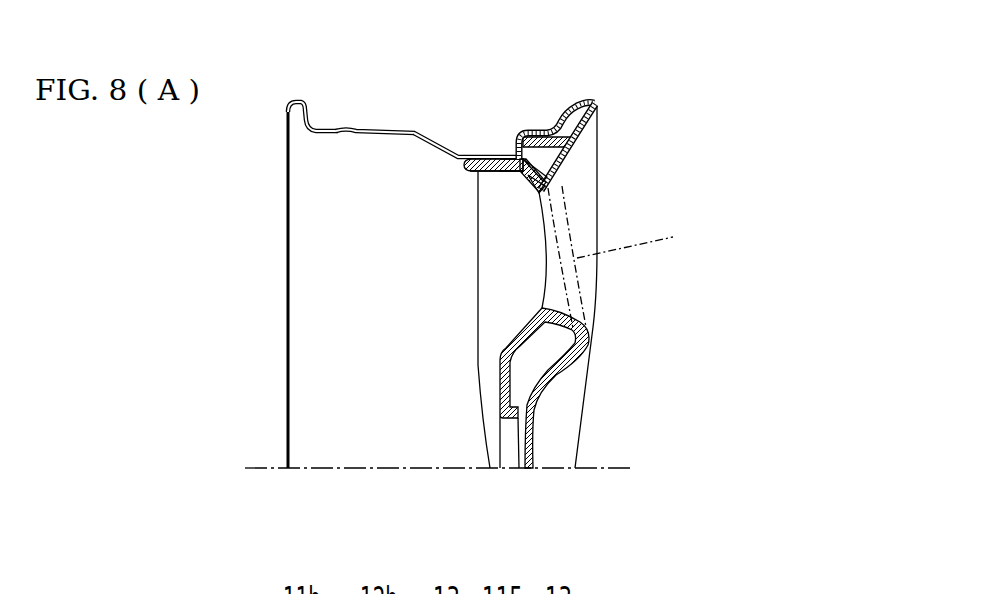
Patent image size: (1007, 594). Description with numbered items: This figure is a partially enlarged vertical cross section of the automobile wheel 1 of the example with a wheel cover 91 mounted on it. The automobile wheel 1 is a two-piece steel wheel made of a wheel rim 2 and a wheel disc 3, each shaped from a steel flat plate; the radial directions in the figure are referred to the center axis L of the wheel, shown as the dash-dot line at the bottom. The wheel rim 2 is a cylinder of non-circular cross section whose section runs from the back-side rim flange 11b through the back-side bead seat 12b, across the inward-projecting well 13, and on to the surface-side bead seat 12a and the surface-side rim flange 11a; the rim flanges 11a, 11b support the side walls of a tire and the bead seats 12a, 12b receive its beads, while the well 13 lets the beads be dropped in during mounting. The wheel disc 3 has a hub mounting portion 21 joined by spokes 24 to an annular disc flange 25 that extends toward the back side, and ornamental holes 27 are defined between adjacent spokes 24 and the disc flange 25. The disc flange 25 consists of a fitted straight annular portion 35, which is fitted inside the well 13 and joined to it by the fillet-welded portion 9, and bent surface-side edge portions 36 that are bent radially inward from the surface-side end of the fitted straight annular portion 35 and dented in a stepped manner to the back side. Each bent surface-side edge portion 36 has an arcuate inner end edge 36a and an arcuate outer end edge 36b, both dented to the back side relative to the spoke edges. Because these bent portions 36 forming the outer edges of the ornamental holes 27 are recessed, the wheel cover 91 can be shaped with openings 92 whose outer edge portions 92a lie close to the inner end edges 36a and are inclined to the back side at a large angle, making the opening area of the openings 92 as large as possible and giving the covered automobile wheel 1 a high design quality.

The automobile wheel 1 is at (389, 241).
The wheel rim 2 is at (310, 314).
The wheel disc 3 is at (402, 241).
The welded portion 9 is at (462, 160).
The rim flange 11a is at (578, 107).
The rim flange 11b is at (293, 102).
The surface-side bead seat 12a is at (564, 131).
The back-side bead seat 12b is at (323, 129).
The well 13 is at (475, 158).
The hub mounting portion 21 is at (485, 393).
The spokes 24 is at (648, 237).
The disc flange 25 is at (512, 158).
The ornamental holes 27 is at (478, 275).
The fitted straight annular portion 35 is at (518, 163).
The bent surface-side edge portion 36 is at (527, 185).
The inner end edge 36a is at (532, 190).
The outer end edge 36b is at (555, 168).
The wheel cover 91 is at (565, 405).
The openings 92 is at (563, 248).
The outer edge portions 92a is at (560, 150).
The center axis L is at (270, 470).